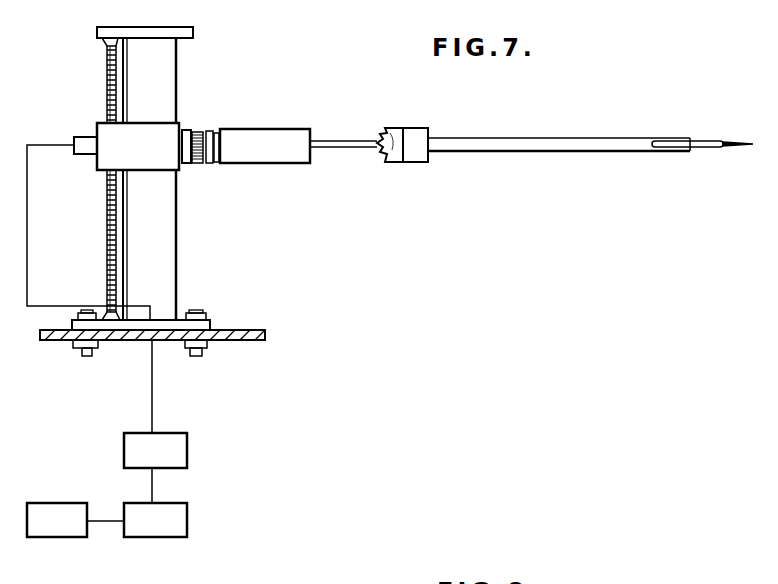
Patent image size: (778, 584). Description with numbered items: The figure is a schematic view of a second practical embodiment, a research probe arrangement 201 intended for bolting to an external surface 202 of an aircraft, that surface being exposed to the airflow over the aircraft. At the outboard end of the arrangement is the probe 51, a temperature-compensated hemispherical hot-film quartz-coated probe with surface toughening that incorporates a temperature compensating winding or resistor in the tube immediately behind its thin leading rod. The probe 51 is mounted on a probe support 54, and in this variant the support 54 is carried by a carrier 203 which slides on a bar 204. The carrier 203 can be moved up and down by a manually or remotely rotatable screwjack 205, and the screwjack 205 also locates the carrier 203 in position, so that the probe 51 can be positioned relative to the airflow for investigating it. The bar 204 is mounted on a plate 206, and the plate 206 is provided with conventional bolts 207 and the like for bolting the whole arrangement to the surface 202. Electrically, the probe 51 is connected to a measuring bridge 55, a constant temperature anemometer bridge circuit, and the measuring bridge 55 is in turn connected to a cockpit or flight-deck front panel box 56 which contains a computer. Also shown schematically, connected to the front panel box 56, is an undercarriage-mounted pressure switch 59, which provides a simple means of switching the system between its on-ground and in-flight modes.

The probe 51 is at (738, 142).
The probe support 54 is at (522, 142).
The measuring bridge 55 is at (178, 448).
The front panel box 56 is at (168, 525).
The pressure switch 59 is at (68, 527).
The research probe arrangement 201 is at (290, 123).
The external surface 202 is at (253, 329).
The carrier 203 is at (157, 158).
The bar 204 is at (166, 81).
The screwjack 205 is at (107, 70).
The plate 206 is at (160, 320).
The bolts 207 is at (88, 311).